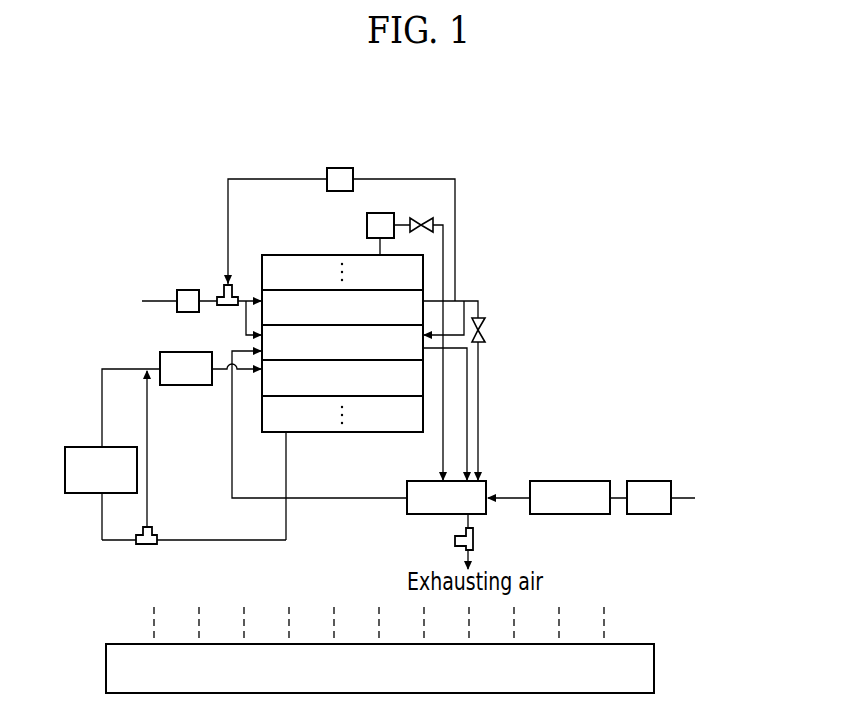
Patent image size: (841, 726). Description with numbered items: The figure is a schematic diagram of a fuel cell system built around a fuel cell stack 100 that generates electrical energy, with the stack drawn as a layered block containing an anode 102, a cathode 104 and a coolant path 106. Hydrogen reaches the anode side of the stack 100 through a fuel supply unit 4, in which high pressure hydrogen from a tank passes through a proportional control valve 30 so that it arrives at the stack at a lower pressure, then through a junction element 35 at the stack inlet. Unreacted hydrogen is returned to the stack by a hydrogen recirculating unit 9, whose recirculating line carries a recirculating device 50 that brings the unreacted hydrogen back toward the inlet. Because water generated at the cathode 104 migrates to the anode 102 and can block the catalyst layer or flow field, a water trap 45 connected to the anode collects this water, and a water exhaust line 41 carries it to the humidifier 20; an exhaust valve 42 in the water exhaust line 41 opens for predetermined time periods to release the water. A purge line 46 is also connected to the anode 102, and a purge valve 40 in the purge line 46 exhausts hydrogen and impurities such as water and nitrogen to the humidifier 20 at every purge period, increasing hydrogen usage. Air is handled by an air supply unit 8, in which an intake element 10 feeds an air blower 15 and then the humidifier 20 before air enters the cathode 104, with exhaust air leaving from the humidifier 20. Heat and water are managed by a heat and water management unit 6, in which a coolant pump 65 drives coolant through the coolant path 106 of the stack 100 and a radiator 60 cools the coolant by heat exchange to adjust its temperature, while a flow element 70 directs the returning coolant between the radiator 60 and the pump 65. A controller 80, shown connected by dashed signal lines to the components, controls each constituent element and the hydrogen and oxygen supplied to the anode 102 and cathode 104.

The fuel supply unit 4 is at (166, 281).
The heat and water management unit 6 is at (242, 547).
The air supply unit 8 is at (590, 524).
The hydrogen recirculating unit 9 is at (272, 172).
The air blower 10 is at (647, 481).
The air blower 15 is at (567, 481).
The humidifier 20 is at (406, 507).
The proportional control valve 30 is at (188, 290).
The hydrogen ejector 35 is at (236, 296).
The purge valve 40 is at (482, 316).
The water exhaust line 41 is at (410, 220).
The exhaust valve 42 is at (425, 217).
The water trap 45 is at (367, 224).
The purge line 46 is at (470, 300).
The recirculation pump 50 is at (341, 168).
The radiator 60 is at (73, 447).
The coolant pump 65 is at (186, 386).
The three-way valve 70 is at (147, 546).
The controller 80 is at (654, 667).
The fuel cell stack 100 is at (343, 434).
The anode 102 is at (343, 307).
The cathode 104 is at (342, 342).
The coolant path 106 is at (343, 377).